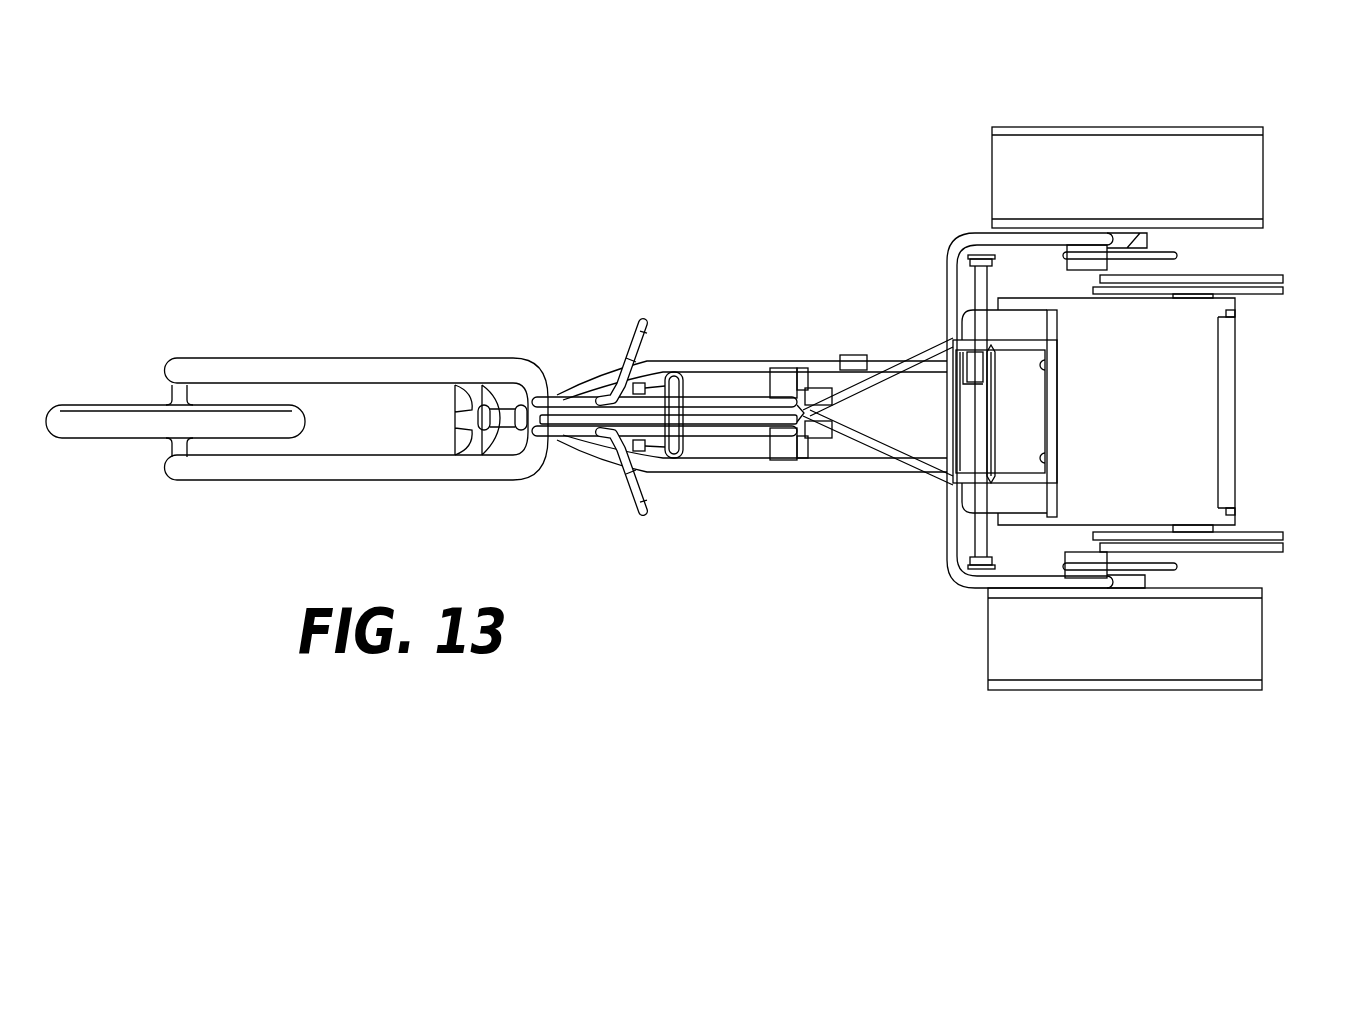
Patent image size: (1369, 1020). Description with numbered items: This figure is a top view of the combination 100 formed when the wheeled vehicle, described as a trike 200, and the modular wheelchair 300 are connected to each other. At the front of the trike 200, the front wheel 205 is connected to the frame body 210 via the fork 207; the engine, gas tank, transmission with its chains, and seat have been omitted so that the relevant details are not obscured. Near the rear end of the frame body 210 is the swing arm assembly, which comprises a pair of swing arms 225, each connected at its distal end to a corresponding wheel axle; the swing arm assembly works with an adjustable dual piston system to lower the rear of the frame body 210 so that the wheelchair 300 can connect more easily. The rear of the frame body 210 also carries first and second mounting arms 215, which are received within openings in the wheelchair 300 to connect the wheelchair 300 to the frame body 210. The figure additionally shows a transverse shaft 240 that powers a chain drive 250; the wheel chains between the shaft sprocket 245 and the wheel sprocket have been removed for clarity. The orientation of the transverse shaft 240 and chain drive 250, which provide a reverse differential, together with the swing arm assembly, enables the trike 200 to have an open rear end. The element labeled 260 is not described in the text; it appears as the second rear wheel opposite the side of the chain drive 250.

The combination 100 is at (945, 715).
The wheeled vehicle 200 is at (585, 276).
The front wheel 205 is at (68, 426).
The fork 207 is at (316, 372).
The frame body 210 is at (721, 367).
The mounting arms 215 is at (1015, 470).
The swing arms 225 is at (975, 231).
The transverse shaft 240 is at (970, 368).
The shaft sprocket 245 is at (967, 562).
The chain drive 250 is at (1127, 247).
The second rear wheel 260 is at (1067, 558).
The wheelchair 300 is at (1252, 425).